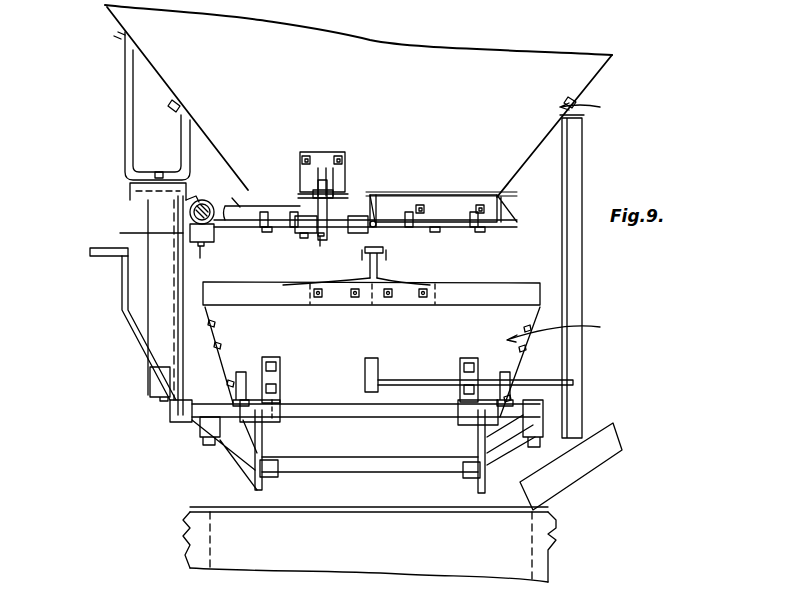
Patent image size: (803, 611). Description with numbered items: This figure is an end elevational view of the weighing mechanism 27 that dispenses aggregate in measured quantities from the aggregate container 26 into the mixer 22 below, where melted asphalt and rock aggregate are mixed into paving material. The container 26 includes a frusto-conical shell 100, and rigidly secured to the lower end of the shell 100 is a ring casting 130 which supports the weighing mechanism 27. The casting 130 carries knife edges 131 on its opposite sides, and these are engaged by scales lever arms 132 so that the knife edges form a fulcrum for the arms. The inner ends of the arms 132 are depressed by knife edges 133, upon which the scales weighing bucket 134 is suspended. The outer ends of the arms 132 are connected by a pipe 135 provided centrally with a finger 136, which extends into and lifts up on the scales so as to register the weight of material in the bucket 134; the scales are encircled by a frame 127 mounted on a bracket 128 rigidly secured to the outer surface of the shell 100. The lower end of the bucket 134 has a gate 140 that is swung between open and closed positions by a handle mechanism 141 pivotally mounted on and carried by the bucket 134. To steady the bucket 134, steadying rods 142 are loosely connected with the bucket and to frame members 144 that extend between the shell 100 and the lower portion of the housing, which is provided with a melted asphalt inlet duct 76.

The frusto-conical shell 100 is at (162, 42).
The bracket 128 is at (125, 150).
The frame 127 is at (160, 285).
The handle mechanism 141 is at (137, 327).
The finger 136 is at (186, 232).
The scales lever arms 132 is at (278, 200).
The knife edges 131 is at (320, 235).
The pipe 135 is at (210, 206).
The knife edges 133 is at (386, 218).
The ring casting 130 is at (462, 203).
The aggregate container 26 is at (592, 115).
The scales weighing bucket 134 is at (517, 273).
The weighing mechanism 27 is at (567, 328).
The steadying rods 142 is at (552, 382).
The frame members 144 is at (572, 412).
The gate 140 is at (373, 473).
The melted asphalt inlet duct 76 is at (570, 480).
The mixer 22 is at (189, 559).